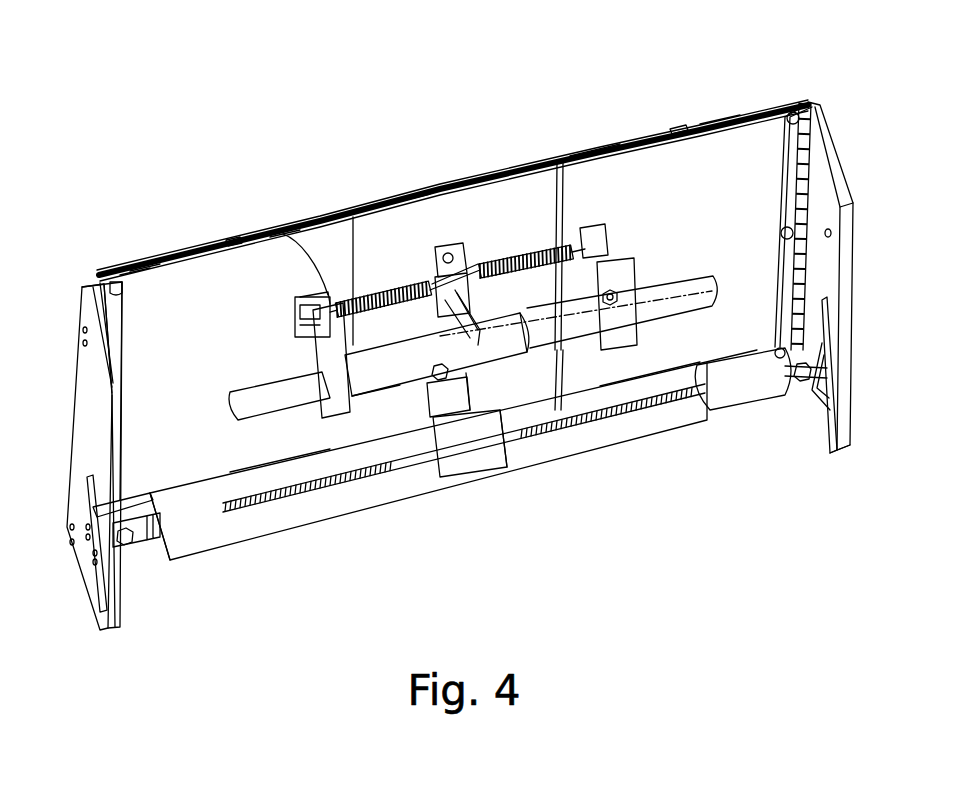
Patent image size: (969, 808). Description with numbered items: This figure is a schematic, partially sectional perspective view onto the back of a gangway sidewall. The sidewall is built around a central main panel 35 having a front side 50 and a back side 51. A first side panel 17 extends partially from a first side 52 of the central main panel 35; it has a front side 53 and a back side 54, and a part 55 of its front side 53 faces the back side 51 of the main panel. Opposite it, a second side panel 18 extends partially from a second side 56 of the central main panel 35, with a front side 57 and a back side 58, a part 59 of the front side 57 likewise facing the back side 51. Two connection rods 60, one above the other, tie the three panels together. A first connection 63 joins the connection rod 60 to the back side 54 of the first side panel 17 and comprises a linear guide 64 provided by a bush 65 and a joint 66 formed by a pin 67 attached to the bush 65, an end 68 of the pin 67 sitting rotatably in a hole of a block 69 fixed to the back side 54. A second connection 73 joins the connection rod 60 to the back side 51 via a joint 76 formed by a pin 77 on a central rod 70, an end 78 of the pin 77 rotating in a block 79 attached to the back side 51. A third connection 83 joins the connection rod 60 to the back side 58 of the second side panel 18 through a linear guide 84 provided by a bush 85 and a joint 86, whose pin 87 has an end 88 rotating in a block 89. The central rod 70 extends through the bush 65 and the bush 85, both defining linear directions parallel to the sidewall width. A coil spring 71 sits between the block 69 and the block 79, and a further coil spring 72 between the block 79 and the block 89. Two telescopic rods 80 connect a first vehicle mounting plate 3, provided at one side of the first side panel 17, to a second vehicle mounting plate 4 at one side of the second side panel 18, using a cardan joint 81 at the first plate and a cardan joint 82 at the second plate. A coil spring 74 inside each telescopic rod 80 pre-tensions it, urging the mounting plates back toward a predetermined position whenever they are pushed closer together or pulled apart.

The first vehicle mounting plate 3 is at (845, 450).
The second vehicle mounting plate 4 is at (97, 597).
The first side panel 17 is at (758, 112).
The second side panel 18 is at (103, 275).
The central main panel 35 is at (385, 217).
The front side of the central main panel 50 is at (350, 198).
The back side of the central main panel 51 is at (403, 207).
The first side of the central main panel 52 is at (682, 127).
The front side of the first side panel 53 is at (715, 122).
The back side of the first side panel 54 is at (727, 143).
The part of the front side of the first side panel 55 is at (590, 145).
The second side of the central main panel 56 is at (135, 262).
The front side of the second side panel 57 is at (142, 262).
The back side of the second side panel 58 is at (160, 330).
The part of the front side of the second side panel 59 is at (233, 243).
The connection rod 60 is at (415, 352).
The first connection 63 is at (605, 267).
The linear guide 64 is at (608, 485).
The bush 65 is at (590, 430).
The joint 66 is at (618, 254).
The pin 67 is at (603, 258).
The end of the pin 68 is at (575, 250).
The block 69 is at (615, 345).
The central rod 70 is at (488, 348).
The coil spring 71 is at (518, 257).
The further coil spring 72 is at (382, 290).
The second connection 73 is at (512, 446).
The coil spring 74 is at (573, 385).
The joint 76 is at (480, 405).
The pin 77 is at (528, 418).
The end of the pin 78 is at (435, 258).
The block 79 is at (440, 417).
The telescopic rod 80 is at (277, 520).
The cardan joint 81 is at (797, 375).
The cardan joint 82 is at (128, 540).
The third connection 83 is at (280, 232).
The linear guide 84 is at (337, 465).
The bush 85 is at (348, 405).
The joint 86 is at (300, 430).
The pin 87 is at (372, 382).
The end of the pin 88 is at (312, 316).
The block 89 is at (330, 297).